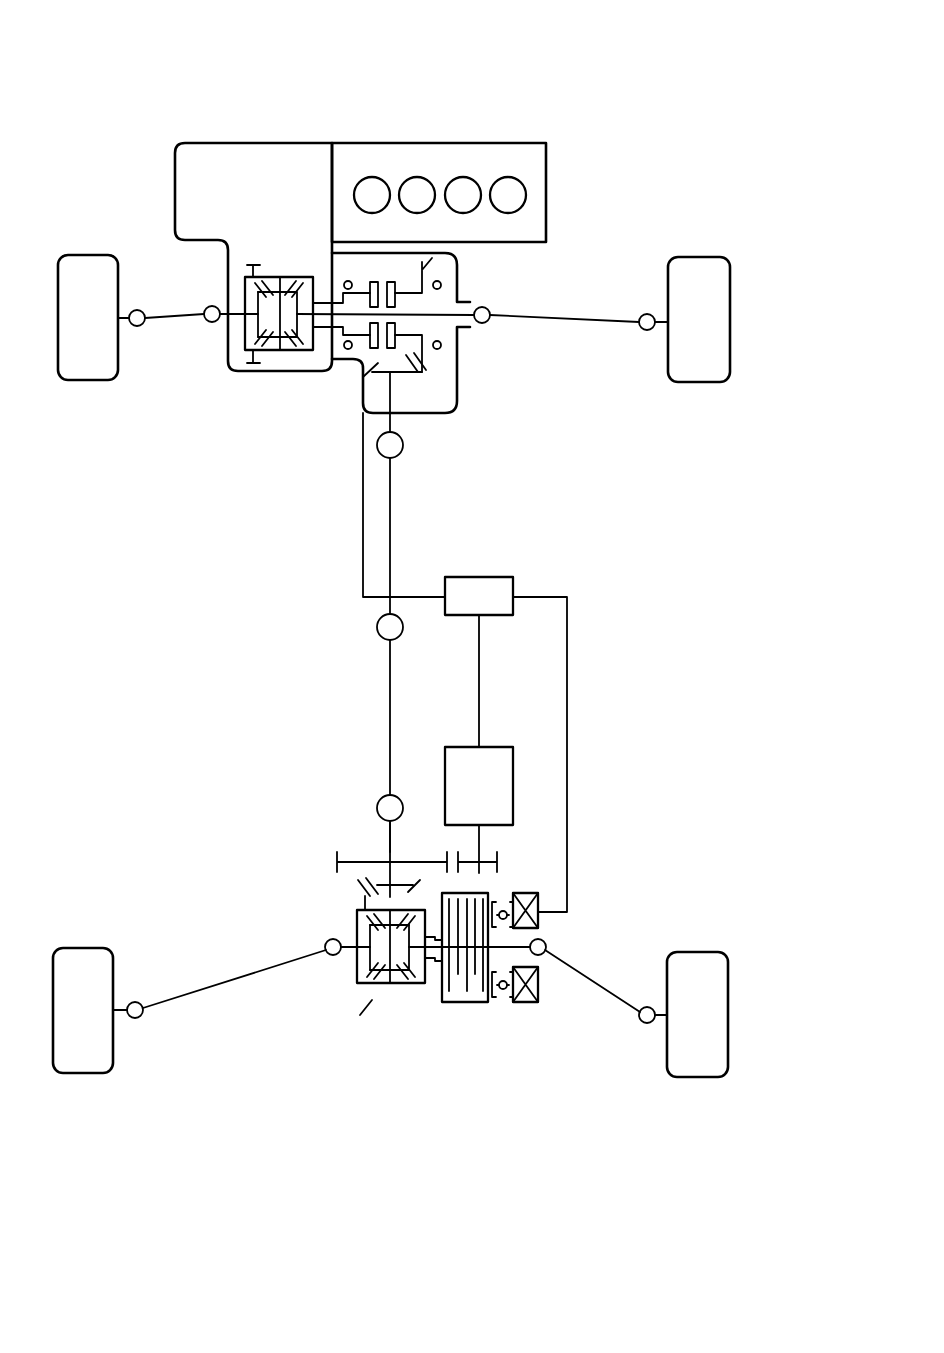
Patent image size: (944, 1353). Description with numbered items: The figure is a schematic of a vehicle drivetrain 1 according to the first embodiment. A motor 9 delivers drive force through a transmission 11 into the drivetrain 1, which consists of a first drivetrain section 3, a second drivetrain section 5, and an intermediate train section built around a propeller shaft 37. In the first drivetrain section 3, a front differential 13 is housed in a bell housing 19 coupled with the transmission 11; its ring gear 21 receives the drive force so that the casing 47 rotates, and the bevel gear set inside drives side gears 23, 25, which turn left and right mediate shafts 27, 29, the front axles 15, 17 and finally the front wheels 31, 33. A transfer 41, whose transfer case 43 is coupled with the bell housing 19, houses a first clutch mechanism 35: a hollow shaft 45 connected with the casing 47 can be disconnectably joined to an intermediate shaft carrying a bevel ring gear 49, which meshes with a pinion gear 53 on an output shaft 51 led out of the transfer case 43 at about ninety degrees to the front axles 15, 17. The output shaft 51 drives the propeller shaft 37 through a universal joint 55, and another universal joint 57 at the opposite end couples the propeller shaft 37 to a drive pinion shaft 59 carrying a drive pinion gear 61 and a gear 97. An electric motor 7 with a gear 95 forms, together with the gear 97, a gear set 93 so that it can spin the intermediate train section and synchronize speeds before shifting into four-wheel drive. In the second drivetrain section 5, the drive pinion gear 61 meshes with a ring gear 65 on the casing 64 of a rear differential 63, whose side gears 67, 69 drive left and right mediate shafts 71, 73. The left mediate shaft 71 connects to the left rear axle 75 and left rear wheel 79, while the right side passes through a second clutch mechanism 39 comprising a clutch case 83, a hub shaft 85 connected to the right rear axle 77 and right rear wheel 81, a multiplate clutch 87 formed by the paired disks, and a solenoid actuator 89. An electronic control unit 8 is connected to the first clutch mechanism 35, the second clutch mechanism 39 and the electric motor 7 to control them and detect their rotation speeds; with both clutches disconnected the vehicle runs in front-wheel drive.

The drivetrain 1 is at (548, 92).
The first drivetrain section 3 is at (556, 205).
The second drivetrain section 5 is at (376, 724).
The electric motor 7 is at (500, 745).
The electronic control unit (ECU) 8 is at (504, 577).
The motor 9 is at (477, 140).
The transmission 11 is at (283, 142).
The front differential 13 is at (286, 353).
The front axle 15 is at (158, 311).
The front axle 17 is at (583, 317).
The bell housing 19 is at (226, 367).
The ring gear 21 is at (253, 364).
The side gear 23 is at (256, 321).
The side gear 25 is at (308, 351).
The left mediate shaft 27 is at (236, 312).
The right mediate shaft 29 is at (321, 303).
The front wheel 31 is at (80, 255).
The front wheel 33 is at (694, 257).
The first clutch mechanism 35 is at (388, 274).
The propeller shaft 37 is at (395, 568).
The second clutch mechanism 39 is at (450, 1006).
The transfer 41 is at (459, 374).
The transfer case 43 is at (458, 404).
The hollow shaft 45 is at (360, 335).
The casing 47 is at (271, 277).
The ring gear 49 is at (424, 354).
The output shaft 51 is at (393, 398).
The pinion gear 53 is at (408, 374).
The universal joint 55 is at (404, 452).
The universal joint 57 is at (377, 806).
The drive pinion shaft 59 is at (378, 841).
The drive pinion gear 61 is at (360, 882).
The rear differential 63 is at (393, 991).
The casing 64 is at (362, 988).
The ring gear 65 is at (365, 1010).
The side gear 67 is at (352, 958).
The side gear 69 is at (428, 983).
The left mediate shaft 71 is at (348, 945).
The right mediate shaft 73 is at (441, 968).
The left rear axle 75 is at (210, 985).
The right rear axle 77 is at (589, 975).
The rear wheel 79 is at (80, 948).
The rear wheel 81 is at (693, 952).
The clutch case 83 is at (480, 1003).
The hub shaft 85 is at (534, 968).
The multiplate clutch 87 is at (466, 1003).
The actuator 89 is at (538, 1001).
The gear set 93 is at (504, 862).
The gear 95 is at (498, 856).
The gear 97 is at (337, 858).